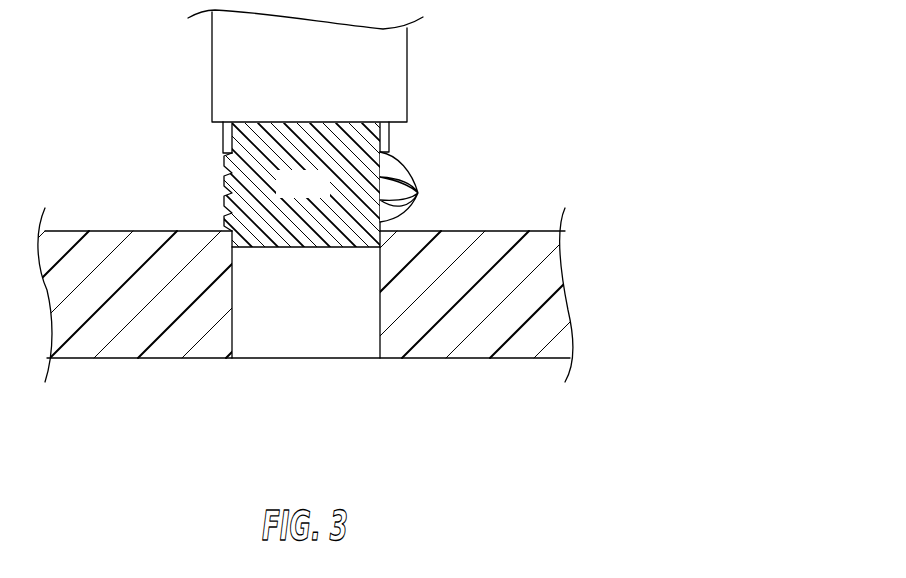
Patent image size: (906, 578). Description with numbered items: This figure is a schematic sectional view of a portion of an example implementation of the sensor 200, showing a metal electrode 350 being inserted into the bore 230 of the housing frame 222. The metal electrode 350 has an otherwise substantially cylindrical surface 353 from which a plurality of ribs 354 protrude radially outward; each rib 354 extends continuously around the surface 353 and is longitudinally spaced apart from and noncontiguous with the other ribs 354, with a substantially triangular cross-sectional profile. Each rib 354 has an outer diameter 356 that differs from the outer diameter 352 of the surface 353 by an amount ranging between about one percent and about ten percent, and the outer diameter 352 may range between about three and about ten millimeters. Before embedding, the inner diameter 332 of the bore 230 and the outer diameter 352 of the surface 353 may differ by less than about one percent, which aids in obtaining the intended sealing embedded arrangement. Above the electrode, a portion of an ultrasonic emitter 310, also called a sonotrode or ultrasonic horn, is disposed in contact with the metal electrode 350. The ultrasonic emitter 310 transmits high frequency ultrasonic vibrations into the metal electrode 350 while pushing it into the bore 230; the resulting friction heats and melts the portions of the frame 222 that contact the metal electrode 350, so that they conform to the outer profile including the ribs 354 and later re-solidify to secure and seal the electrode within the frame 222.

The sensor 200 is at (537, 122).
The housing frame 222 is at (505, 231).
The bore 230 is at (325, 321).
The ultrasonic emitter 310 is at (212, 60).
The inner diameter of the bore 332 is at (380, 380).
The metal electrode 350 is at (321, 195).
The outer diameter of the surface 352 is at (380, 100).
The substantially cylindrical surface 353 is at (226, 190).
The ribs 354 is at (418, 193).
The outer diameter of the rib 356 is at (172, 138).